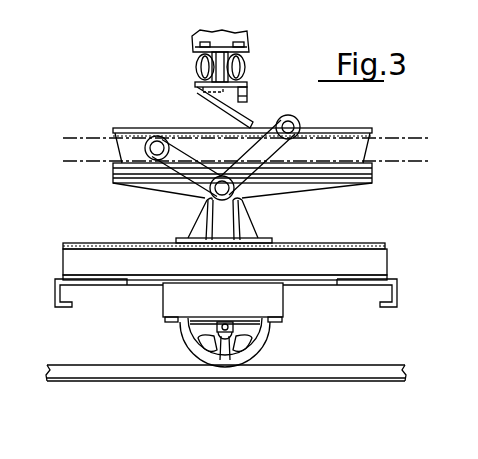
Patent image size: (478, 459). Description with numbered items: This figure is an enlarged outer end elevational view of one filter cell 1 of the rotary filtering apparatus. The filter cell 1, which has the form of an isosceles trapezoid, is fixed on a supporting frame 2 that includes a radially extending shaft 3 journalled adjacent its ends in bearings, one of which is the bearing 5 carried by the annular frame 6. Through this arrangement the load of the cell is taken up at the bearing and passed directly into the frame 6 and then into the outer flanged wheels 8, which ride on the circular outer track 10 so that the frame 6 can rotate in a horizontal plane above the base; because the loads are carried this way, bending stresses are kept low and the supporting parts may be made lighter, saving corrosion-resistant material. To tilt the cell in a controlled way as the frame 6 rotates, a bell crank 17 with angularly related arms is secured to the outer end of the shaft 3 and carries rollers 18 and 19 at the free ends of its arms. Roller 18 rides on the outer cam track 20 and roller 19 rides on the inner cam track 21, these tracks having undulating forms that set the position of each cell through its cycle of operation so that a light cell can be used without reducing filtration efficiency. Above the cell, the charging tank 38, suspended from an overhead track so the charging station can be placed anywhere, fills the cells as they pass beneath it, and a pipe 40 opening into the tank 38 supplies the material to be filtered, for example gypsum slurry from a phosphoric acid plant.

The filter cell 1 is at (122, 145).
The supporting frame 2 is at (120, 178).
The shaft 3 is at (238, 203).
The bearing 5 is at (203, 208).
The annular frame 6 is at (90, 262).
The outer flanged wheel 8 is at (270, 337).
The outer track 10 is at (372, 365).
The bell crank 17 is at (184, 150).
The roller 18 is at (293, 120).
The roller 19 is at (157, 137).
The outer cam track 20 is at (405, 137).
The inner cam track 21 is at (404, 161).
The charging tank 38 is at (247, 88).
The pipe 40 is at (249, 52).